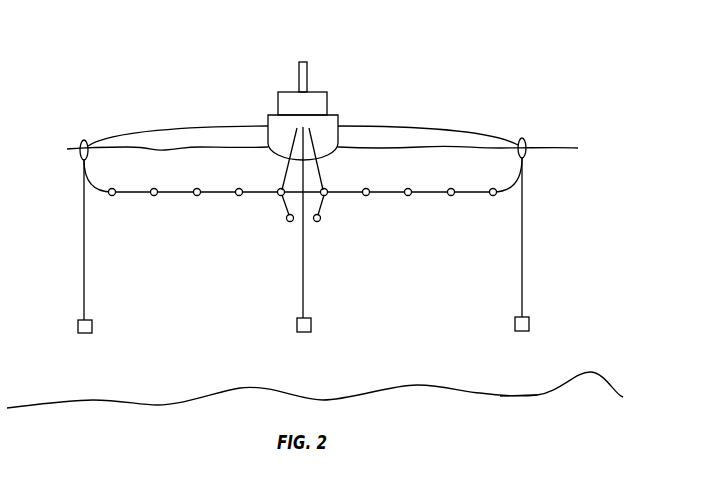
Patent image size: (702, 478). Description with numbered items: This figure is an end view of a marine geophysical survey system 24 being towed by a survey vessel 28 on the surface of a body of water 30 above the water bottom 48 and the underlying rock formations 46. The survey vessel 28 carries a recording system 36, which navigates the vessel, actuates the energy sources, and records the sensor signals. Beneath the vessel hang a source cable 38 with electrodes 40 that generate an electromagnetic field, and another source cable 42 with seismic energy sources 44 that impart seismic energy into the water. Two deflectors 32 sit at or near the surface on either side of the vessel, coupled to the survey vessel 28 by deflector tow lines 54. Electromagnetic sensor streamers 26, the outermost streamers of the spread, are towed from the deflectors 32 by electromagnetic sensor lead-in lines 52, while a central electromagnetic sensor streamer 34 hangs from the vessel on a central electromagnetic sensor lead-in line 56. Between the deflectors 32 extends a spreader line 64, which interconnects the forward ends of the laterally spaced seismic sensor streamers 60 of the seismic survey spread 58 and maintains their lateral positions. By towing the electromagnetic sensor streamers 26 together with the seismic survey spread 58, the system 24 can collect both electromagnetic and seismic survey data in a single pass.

The marine geophysical survey system 24 is at (375, 55).
The electromagnetic sensor streamers 26 is at (85, 334).
The survey vessel 28 is at (333, 114).
The body of water 30 is at (560, 147).
The deflectors 32 is at (83, 140).
The central electromagnetic sensor streamer 34 is at (303, 333).
The recording system 36 is at (317, 91).
The source cable 38 is at (315, 173).
The electrodes 40 is at (317, 222).
The source cable 42 is at (290, 173).
The seismic energy sources 44 is at (290, 222).
The rock formations 46 is at (425, 416).
The water bottom 48 is at (517, 398).
The electromagnetic sensor lead-in lines 52 is at (84, 248).
The deflector tow lines 54 is at (172, 130).
The central electromagnetic sensor lead-in line 56 is at (305, 274).
The seismic survey spread 58 is at (205, 75).
The seismic sensor streamers 60 is at (115, 189).
The spreader line 64 is at (108, 189).